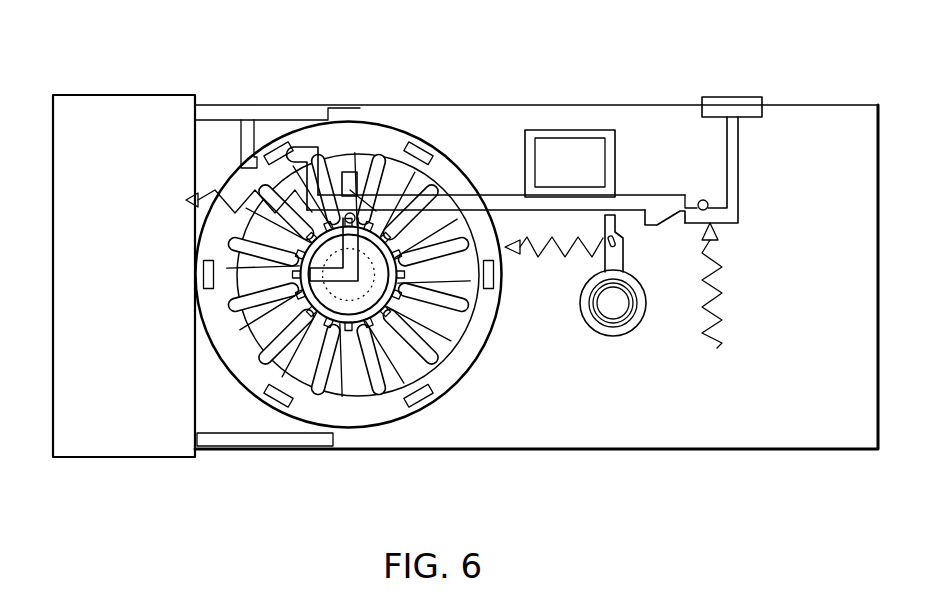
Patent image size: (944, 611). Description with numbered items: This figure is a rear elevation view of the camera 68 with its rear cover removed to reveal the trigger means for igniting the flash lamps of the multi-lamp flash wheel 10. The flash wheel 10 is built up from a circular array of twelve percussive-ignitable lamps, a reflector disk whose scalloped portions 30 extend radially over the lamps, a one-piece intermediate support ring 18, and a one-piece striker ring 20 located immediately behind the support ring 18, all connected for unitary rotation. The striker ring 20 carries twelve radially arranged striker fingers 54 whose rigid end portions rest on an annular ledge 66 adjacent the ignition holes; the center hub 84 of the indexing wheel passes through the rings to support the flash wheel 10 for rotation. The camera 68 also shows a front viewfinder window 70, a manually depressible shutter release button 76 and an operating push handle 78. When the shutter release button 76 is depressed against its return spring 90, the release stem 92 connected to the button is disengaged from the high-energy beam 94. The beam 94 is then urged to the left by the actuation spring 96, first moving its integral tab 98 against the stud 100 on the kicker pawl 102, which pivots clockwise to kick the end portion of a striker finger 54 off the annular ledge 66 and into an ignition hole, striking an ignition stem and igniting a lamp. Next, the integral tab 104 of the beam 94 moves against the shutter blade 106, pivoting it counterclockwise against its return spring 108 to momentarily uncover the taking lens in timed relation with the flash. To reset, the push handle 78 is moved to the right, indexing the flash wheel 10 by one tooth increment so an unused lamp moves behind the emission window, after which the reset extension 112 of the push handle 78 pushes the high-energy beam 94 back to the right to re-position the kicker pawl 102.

The multi-lamp flash wheel 10 is at (412, 412).
The intermediate support ring 18 is at (456, 386).
The striker ring 20 is at (457, 350).
The scalloped portions 30 is at (262, 367).
The striker fingers 54 is at (257, 228).
The annular ledge 66 is at (362, 292).
The camera 68 is at (467, 100).
The front viewfinder window 70 is at (573, 145).
The shutter release button 76 is at (722, 103).
The operating push handle 78 is at (75, 437).
The center hub 84 is at (483, 328).
The return spring 90 is at (710, 327).
The release stem 92 is at (732, 193).
The high-energy beam 94 is at (506, 205).
The actuation spring 96 is at (200, 196).
The integral tab 98 is at (350, 172).
The stud 100 is at (342, 190).
The kicker pawl 102 is at (310, 273).
The integral tab 104 is at (657, 210).
The shutter blade 106 is at (640, 326).
The return spring 108 is at (515, 255).
The reset extension 112 is at (245, 158).